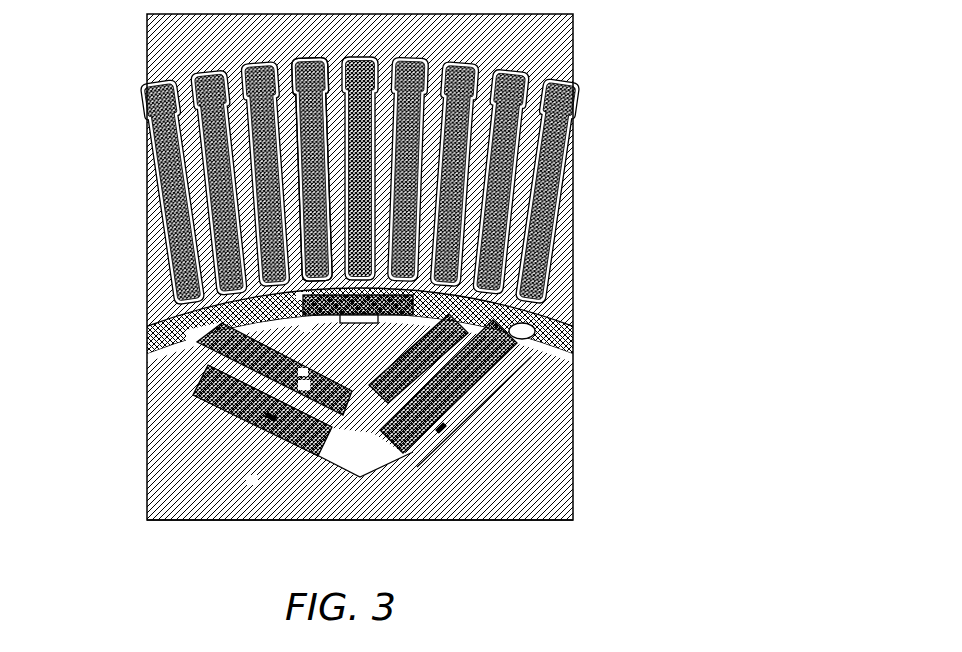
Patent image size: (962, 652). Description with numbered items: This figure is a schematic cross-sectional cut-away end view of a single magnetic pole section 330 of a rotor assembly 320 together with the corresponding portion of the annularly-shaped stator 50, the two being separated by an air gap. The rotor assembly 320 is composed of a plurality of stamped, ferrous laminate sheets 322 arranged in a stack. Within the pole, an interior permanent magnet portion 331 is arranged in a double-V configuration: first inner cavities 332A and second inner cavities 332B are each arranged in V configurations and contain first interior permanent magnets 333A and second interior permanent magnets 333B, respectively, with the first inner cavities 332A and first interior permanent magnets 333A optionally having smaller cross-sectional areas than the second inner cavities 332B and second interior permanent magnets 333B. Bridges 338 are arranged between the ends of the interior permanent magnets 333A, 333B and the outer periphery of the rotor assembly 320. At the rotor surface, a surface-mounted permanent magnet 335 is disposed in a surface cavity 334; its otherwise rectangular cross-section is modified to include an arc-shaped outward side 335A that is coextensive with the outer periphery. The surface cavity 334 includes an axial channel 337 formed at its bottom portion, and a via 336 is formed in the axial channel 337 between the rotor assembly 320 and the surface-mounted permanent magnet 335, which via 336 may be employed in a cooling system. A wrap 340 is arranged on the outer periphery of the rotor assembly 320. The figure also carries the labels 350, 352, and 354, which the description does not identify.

The stator 50 is at (142, 105).
The rotor assembly 320 is at (457, 524).
The laminate sheets 322 is at (470, 548).
The magnetic pole section 330 is at (442, 457).
The interior permanent magnet portion 331 is at (461, 275).
The first inner cavities 332A is at (460, 399).
The second inner cavities 332B is at (458, 342).
The first interior permanent magnets 333A is at (393, 382).
The second interior permanent magnets 333B is at (470, 388).
The surface cavity 334 is at (268, 255).
The surface-mounted permanent magnet 335 is at (300, 297).
The arc-shaped outward side 335A is at (305, 222).
The via 336 is at (350, 325).
The axial channel 337 is at (305, 372).
The bridges 338 is at (528, 338).
The wrap 340 is at (548, 291).
The rotor 350 is at (252, 480).
The rotor core 352 is at (305, 385).
The rotor magnet 354 is at (307, 327).